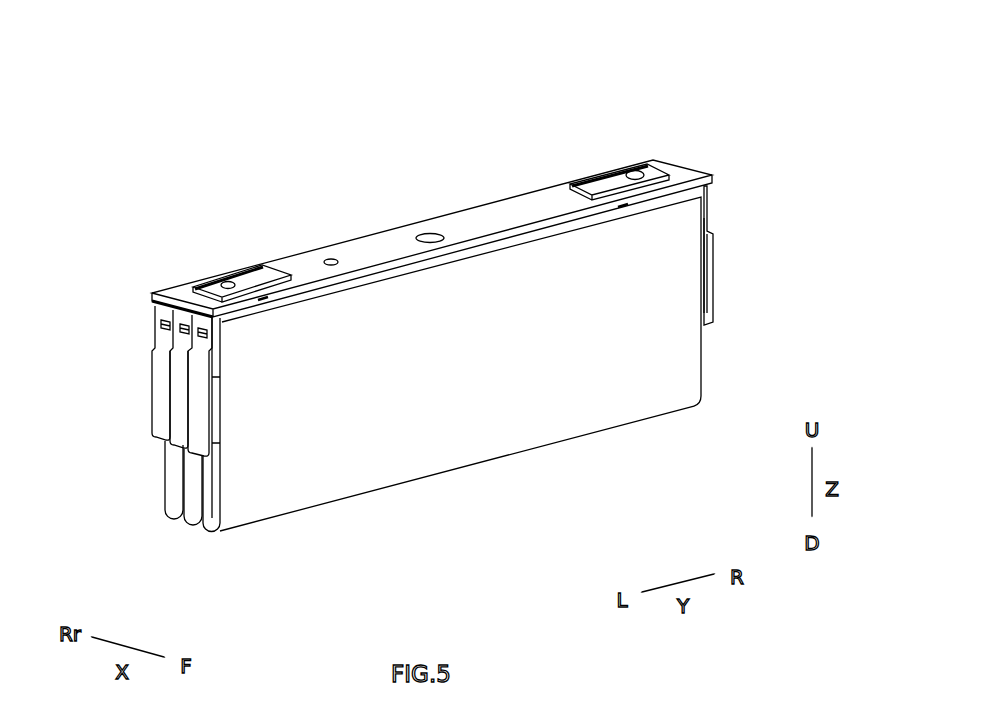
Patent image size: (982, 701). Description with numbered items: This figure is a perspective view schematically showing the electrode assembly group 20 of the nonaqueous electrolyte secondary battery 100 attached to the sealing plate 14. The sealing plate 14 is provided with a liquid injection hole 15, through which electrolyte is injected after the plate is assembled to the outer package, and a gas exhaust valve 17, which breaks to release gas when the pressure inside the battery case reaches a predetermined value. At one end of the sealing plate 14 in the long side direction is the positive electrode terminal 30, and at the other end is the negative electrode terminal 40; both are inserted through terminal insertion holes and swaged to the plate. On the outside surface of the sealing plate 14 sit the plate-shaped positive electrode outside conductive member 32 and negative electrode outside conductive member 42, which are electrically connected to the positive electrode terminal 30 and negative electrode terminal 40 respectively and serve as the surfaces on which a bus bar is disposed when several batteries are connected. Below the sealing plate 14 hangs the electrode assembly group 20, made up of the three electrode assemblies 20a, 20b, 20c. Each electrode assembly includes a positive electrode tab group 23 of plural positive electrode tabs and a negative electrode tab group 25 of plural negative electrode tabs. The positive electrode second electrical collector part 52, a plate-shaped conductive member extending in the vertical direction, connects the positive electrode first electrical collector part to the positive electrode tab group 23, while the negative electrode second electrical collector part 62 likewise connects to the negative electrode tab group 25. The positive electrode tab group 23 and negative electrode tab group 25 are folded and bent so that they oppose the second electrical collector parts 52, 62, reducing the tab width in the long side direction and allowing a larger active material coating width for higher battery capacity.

The nonaqueous electrolyte secondary battery 100 is at (405, 290).
The sealing plate 14 is at (506, 212).
The liquid injection hole 15 is at (334, 258).
The gas exhaust valve 17 is at (433, 233).
The electrode assembly group 20 is at (123, 441).
The electrode assembly 20a is at (212, 517).
The electrode assembly 20b is at (188, 507).
The electrode assembly 20c is at (172, 488).
The positive electrode tab group 23 is at (217, 415).
The negative electrode tab group 25 is at (709, 303).
The positive electrode terminal 30 is at (242, 254).
The positive electrode outside conductive member 32 is at (258, 277).
The negative electrode terminal 40 is at (619, 149).
The negative electrode outside conductive member 42 is at (606, 184).
The positive electrode second electrical collector part 52 is at (146, 392).
The negative electrode second electrical collector part 62 is at (718, 257).